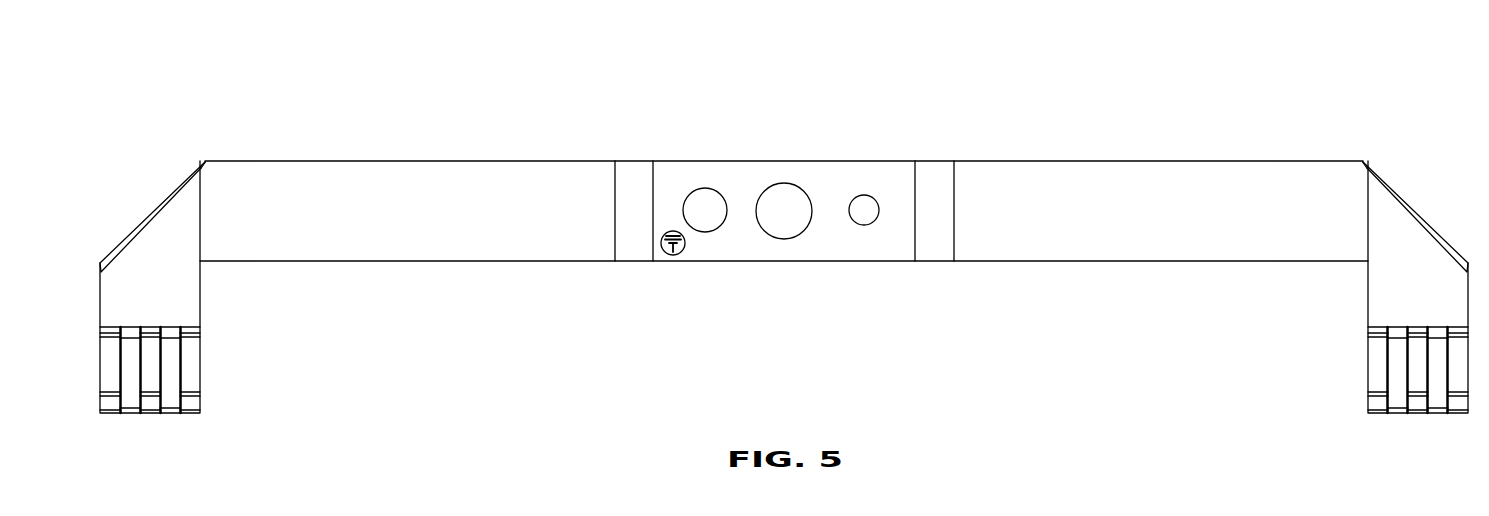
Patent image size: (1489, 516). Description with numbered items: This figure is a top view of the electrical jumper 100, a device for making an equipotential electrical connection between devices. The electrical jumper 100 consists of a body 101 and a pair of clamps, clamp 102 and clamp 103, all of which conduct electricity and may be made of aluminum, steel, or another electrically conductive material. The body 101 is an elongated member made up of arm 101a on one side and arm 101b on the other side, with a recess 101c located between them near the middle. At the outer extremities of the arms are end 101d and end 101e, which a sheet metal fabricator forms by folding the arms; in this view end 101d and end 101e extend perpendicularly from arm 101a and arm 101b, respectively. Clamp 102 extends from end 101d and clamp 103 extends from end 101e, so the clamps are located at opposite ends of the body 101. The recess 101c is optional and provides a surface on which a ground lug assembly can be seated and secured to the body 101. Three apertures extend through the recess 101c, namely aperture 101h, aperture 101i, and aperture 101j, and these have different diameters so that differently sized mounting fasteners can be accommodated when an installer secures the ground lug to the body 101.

The electrical jumper 100 is at (716, 84).
The body 101 is at (1034, 153).
The arm 101a is at (333, 161).
The arm 101b is at (1178, 161).
The recess 101c is at (784, 161).
The end 101d is at (173, 225).
The end 101e is at (1402, 227).
The aperture 101h is at (705, 231).
The aperture 101i is at (791, 238).
The aperture 101j is at (865, 225).
The clamp 102 is at (216, 368).
The clamp 103 is at (1355, 367).